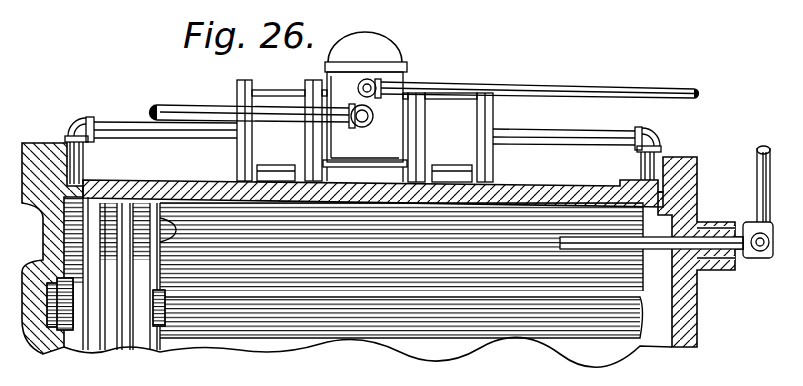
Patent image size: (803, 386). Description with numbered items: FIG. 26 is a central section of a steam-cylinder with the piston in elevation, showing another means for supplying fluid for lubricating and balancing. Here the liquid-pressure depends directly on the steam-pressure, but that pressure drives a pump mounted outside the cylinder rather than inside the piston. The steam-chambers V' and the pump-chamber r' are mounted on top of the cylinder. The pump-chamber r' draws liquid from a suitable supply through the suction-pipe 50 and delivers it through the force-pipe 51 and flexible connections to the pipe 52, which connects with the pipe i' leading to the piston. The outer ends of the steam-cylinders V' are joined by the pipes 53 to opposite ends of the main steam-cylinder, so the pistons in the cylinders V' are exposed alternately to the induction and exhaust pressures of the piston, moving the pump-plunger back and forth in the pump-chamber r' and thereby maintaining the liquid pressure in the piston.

The suction-pipe 50 is at (227, 108).
The force-pipe 51 is at (599, 88).
The pipe 52 is at (755, 178).
The pipes 53 is at (143, 124).
The steam-chambers V' is at (266, 257).
The pump-chamber r' is at (365, 107).
The pipe i' is at (651, 260).